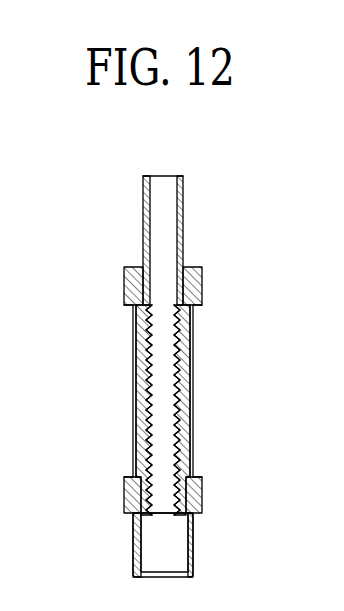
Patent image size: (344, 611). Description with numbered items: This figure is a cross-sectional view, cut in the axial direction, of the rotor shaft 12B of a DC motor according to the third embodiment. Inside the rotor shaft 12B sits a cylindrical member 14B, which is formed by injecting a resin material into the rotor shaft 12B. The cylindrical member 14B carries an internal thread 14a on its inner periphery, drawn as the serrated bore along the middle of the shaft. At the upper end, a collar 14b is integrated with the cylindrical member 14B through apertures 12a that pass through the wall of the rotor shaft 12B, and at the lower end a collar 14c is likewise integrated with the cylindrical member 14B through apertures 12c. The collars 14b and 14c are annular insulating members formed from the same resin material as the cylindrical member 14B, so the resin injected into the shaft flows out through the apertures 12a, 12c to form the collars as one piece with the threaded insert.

The apertures 12a is at (130, 303).
The rotor shaft 12B is at (193, 350).
The apertures 12c is at (125, 498).
The internal thread 14a is at (150, 343).
The collar 14b is at (202, 285).
The cylindrical member 14B is at (140, 404).
The collar 14c is at (202, 493).